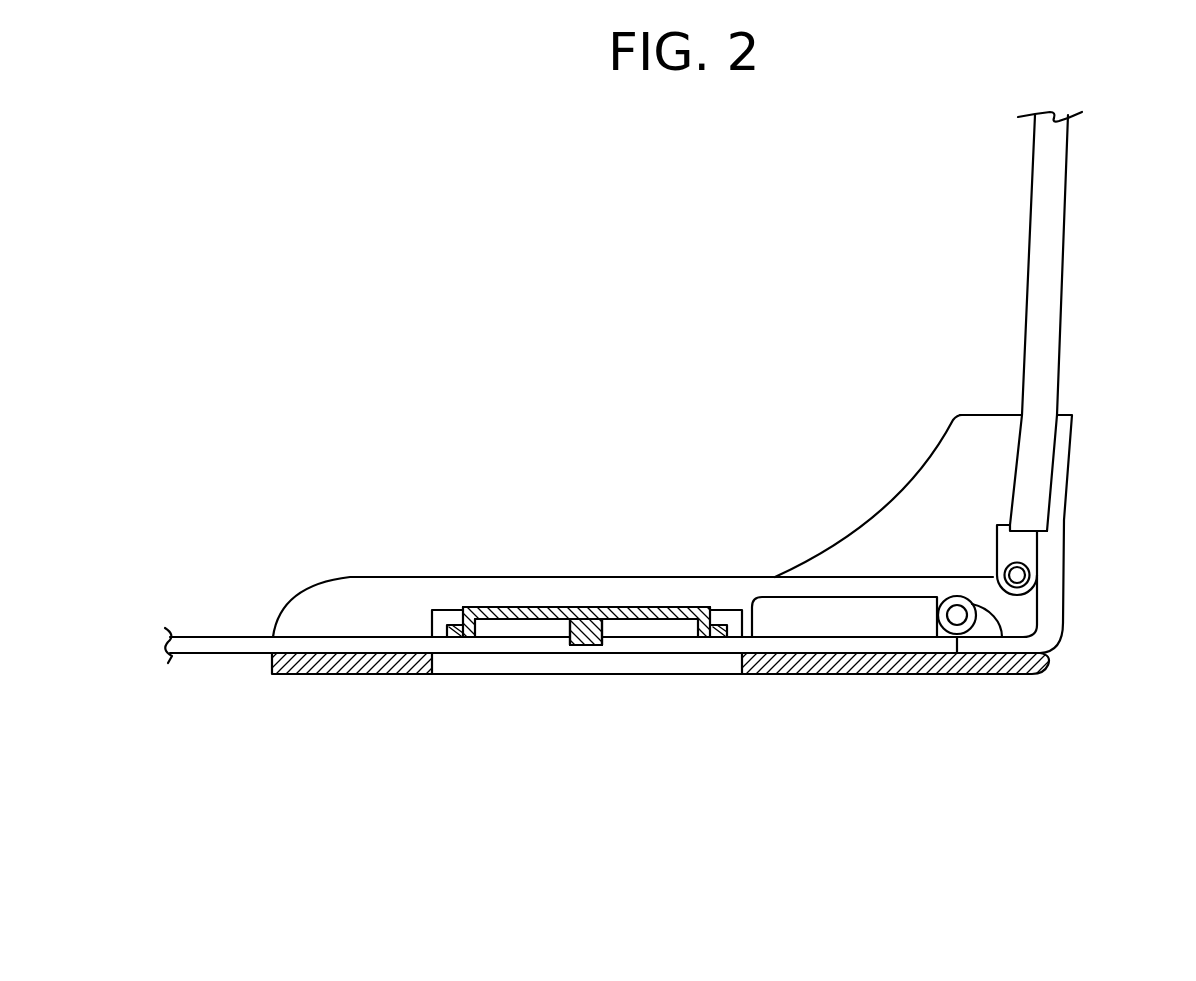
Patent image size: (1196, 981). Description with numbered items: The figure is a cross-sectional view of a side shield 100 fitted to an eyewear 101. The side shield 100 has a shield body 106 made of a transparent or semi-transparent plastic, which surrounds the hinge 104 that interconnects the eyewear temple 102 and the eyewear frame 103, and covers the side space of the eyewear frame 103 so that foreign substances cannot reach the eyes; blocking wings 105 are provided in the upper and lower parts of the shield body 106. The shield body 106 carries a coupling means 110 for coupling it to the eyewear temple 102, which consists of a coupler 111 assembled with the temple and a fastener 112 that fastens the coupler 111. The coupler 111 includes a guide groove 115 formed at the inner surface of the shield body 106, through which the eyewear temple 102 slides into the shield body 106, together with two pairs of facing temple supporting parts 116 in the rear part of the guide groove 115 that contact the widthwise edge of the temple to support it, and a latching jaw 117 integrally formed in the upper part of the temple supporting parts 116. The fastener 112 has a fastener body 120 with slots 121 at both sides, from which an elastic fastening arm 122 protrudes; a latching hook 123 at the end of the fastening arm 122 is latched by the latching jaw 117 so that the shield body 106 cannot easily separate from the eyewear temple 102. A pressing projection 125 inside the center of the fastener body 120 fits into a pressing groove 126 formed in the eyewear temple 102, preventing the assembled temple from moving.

The side shield 100 is at (745, 462).
The eyewear 101 is at (1072, 242).
The eyewear temple 102 is at (195, 652).
The eyewear frame 103 is at (1055, 323).
The hinge 104 is at (947, 598).
The blocking wings 105 is at (940, 450).
The shield body 106 is at (672, 577).
The coupling means 110 is at (521, 697).
The coupler 111 is at (453, 773).
The fastener 112 is at (630, 470).
The guide groove 115 is at (368, 655).
The temple supporting parts 116 is at (432, 617).
The latching jaw 117 is at (455, 627).
The fastener body 120 is at (568, 622).
The slots 121 is at (528, 624).
The fastening arm 122 is at (475, 608).
The latching hook 123 is at (442, 610).
The pressing projection 125 is at (594, 644).
The pressing groove 126 is at (592, 646).